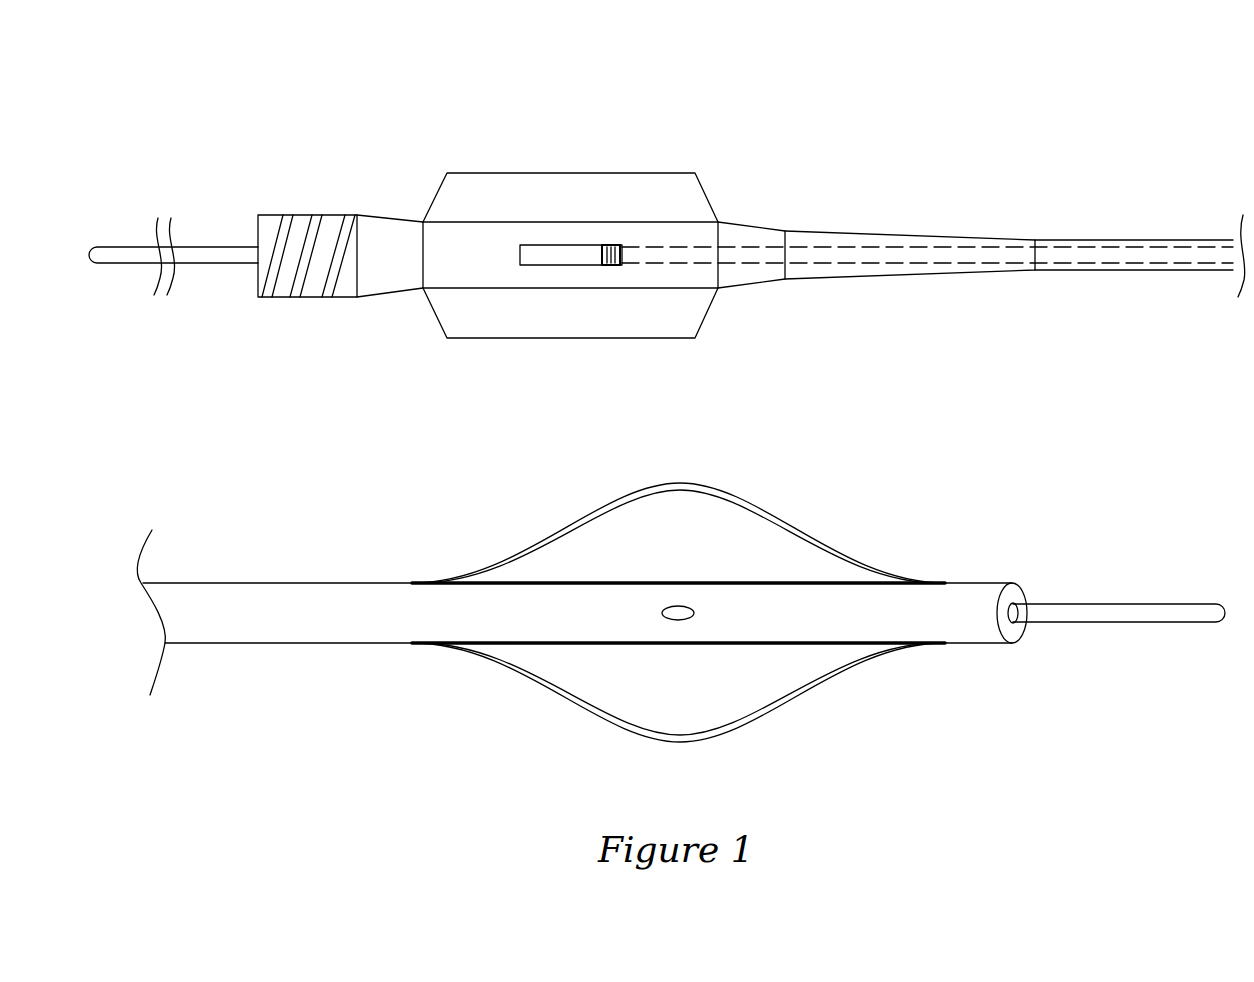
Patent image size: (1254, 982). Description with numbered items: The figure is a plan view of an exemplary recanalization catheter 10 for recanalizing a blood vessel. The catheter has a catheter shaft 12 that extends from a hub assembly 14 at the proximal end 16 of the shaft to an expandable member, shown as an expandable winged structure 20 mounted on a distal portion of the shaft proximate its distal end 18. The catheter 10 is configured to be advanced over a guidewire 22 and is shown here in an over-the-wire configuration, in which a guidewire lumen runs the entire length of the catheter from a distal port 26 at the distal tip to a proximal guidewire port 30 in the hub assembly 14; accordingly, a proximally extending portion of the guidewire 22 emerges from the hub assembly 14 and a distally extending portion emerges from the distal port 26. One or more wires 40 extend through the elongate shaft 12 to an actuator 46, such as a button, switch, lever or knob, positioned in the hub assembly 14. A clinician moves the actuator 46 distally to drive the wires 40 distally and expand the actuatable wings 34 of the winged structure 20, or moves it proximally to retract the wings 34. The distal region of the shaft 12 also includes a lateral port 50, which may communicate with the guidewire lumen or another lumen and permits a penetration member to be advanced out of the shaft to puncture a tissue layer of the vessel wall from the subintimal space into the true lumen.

The recanalization catheter 10 is at (1028, 88).
The catheter shaft 12 is at (1145, 258).
The hub assembly 14 is at (685, 272).
The proximal end 16 is at (1055, 305).
The distal end 18 is at (1023, 660).
The expandable winged structure 20 is at (678, 596).
The guidewire 22 is at (125, 249).
The distal port 26 is at (1015, 605).
The proximal guidewire port 30 is at (257, 286).
The actuatable wings 34 is at (537, 540).
The wire 40 is at (903, 247).
The actuator 46 is at (612, 246).
The lateral port 50 is at (685, 620).